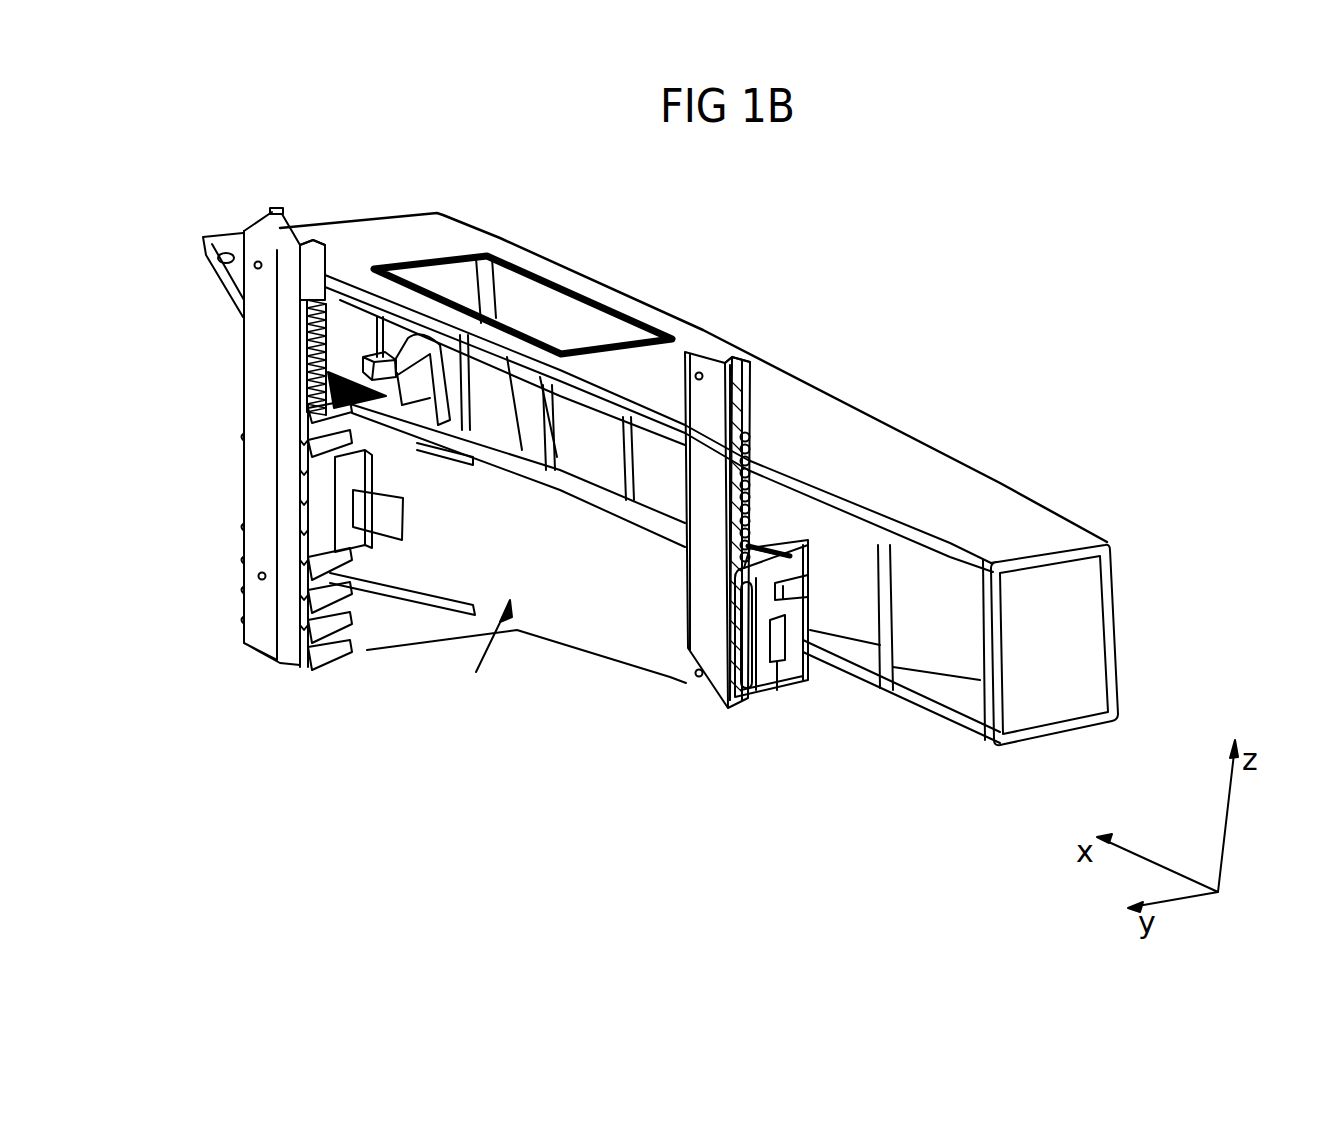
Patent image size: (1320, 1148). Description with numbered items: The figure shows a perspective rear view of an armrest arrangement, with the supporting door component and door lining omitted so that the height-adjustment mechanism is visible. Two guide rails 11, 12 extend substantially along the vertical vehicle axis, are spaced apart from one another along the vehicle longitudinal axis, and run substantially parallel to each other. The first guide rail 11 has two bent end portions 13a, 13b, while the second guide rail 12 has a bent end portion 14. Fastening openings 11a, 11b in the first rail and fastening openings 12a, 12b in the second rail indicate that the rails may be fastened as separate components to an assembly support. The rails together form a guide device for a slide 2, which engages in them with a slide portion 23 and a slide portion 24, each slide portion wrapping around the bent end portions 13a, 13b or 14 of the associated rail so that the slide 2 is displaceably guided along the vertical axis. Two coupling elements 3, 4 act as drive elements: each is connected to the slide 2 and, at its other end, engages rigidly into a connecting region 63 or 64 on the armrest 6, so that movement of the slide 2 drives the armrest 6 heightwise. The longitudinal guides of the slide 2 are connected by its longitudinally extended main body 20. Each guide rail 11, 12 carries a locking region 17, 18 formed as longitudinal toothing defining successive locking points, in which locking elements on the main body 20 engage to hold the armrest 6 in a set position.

The slide 2 is at (482, 662).
The coupling element 3 is at (380, 352).
The coupling element 4 is at (805, 522).
The armrest 6 is at (952, 470).
The guide rail 11 is at (255, 487).
The fastening opening 11a is at (254, 265).
The fastening opening 11b is at (258, 577).
The guide rail 12 is at (693, 650).
The fastening opening 12a is at (702, 372).
The fastening opening 12b is at (700, 684).
The bent end portion 13a is at (322, 242).
The bent end portion 13b is at (272, 208).
The bent end portion 14 is at (747, 355).
The locking region 17 is at (330, 393).
The locking region 18 is at (762, 462).
The main body 20 is at (568, 628).
The slide portion 23 is at (305, 378).
The slide portion 24 is at (760, 558).
The connecting region 63 is at (432, 382).
The connecting region 64 is at (853, 560).